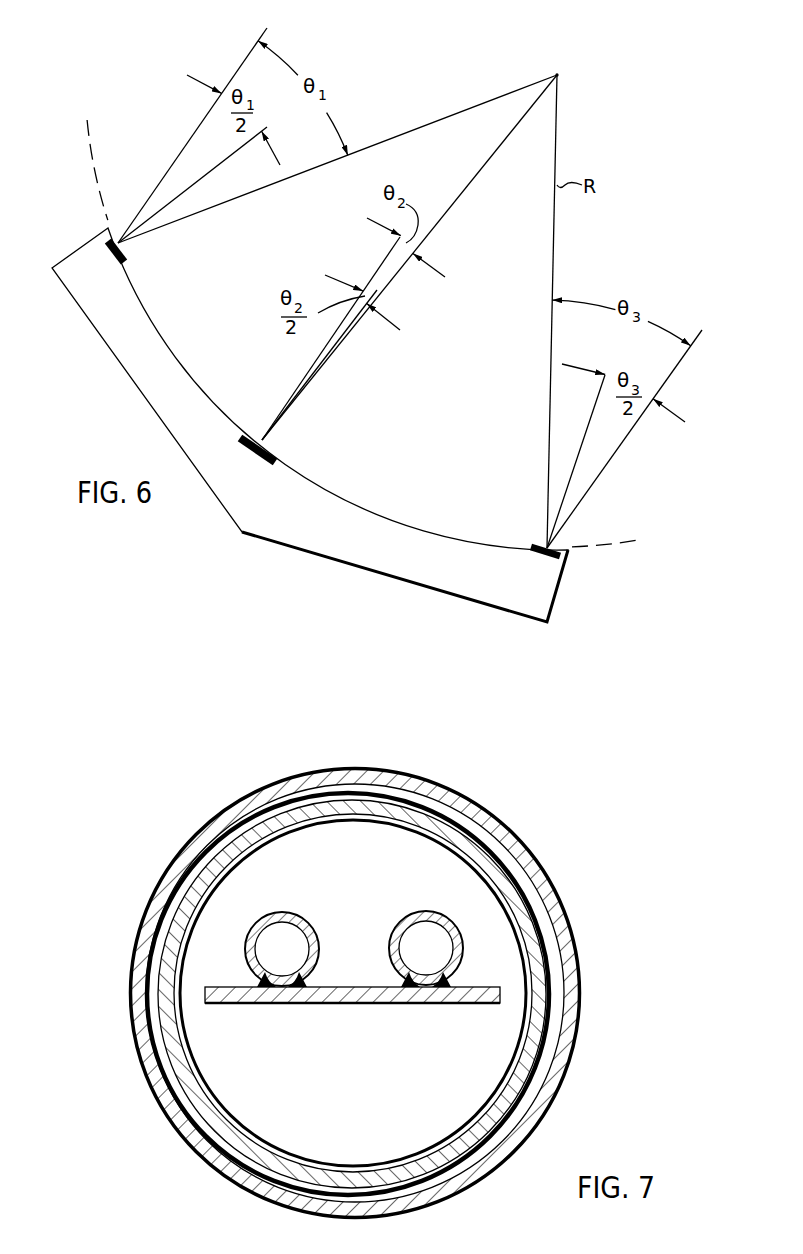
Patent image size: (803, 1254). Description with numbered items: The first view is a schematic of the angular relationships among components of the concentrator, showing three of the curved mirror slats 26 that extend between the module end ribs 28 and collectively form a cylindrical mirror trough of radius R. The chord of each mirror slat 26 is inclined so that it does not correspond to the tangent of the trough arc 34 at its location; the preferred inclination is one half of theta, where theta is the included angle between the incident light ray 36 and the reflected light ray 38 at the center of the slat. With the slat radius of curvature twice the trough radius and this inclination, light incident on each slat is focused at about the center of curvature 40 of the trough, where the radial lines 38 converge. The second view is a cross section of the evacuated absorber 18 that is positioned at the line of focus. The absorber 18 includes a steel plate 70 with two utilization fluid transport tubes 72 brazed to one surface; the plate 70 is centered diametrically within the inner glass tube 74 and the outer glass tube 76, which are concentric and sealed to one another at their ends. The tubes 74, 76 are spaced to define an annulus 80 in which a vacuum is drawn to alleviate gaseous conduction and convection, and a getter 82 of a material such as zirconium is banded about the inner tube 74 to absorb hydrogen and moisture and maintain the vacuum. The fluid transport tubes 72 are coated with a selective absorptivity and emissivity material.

In FIG. 7, the absorber 18 is at (515, 1194).
In FIG. 6, the mirror slat 26 is at (128, 250).
In FIG. 6, the module end rib 28 is at (284, 517).
In FIG. 6, the trough arc 34 is at (93, 158).
In FIG. 6, the incident light ray 36 is at (245, 58).
In FIG. 6, the reflected light ray 38 is at (426, 124).
In FIG. 6, the center of curvature 40 is at (560, 76).
In FIG. 7, the steel plate 70 is at (337, 996).
In FIG. 7, the utilization fluid transport tube 72 is at (397, 927).
In FIG. 7, the inner glass tube 74 is at (520, 1060).
In FIG. 7, the outer glass tube 76 is at (568, 983).
In FIG. 7, the annulus 80 is at (542, 920).
In FIG. 7, the getter 82 is at (530, 853).